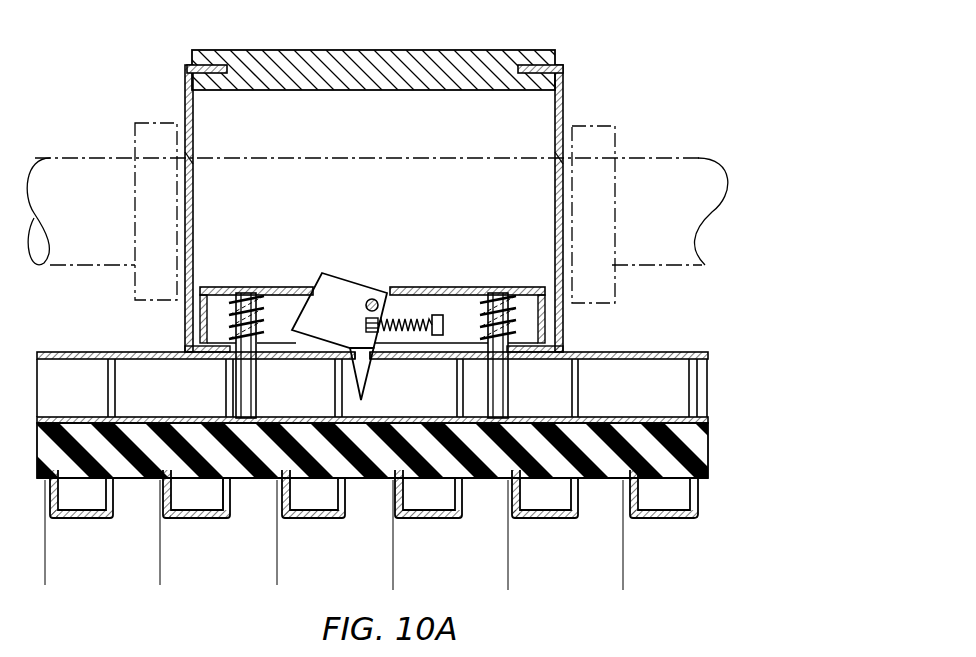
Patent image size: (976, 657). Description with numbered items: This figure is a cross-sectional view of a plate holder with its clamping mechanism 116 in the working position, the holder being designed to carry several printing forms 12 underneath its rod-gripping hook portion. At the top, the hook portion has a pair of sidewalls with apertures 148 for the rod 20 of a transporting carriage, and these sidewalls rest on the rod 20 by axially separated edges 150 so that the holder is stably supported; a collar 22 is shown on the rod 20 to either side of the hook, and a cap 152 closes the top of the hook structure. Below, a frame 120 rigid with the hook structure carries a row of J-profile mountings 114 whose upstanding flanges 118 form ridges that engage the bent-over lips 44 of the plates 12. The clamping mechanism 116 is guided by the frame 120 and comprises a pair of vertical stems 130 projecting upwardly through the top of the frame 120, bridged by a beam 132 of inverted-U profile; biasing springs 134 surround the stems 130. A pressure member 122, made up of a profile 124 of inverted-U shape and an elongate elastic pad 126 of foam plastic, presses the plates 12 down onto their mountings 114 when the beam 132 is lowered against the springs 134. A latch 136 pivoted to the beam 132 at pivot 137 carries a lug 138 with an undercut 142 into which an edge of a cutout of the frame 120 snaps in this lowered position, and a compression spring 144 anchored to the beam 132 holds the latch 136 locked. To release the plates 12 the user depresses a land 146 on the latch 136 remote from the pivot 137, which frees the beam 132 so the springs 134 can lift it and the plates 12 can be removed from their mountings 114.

The printing forms 12 is at (160, 570).
The rod 20 is at (78, 160).
The collar 22 is at (141, 120).
The bent-over lips 44 is at (175, 490).
The J-profile mountings 114 is at (678, 522).
The clamping mechanism 116 is at (153, 410).
The upstanding flanges 118 is at (522, 505).
The frame 120 is at (60, 351).
The pressure member 122 is at (368, 487).
The profile of inverted-U shape 124 is at (188, 416).
The elongate elastic pad 126 is at (709, 462).
The vertical stems 130 is at (257, 374).
The beam 132 is at (458, 287).
The biasing springs 134 is at (240, 300).
The latch 136 is at (366, 390).
The pivot 137 is at (372, 298).
The lug 138 is at (349, 395).
The undercut 142 is at (338, 345).
The compression spring 144 is at (410, 330).
The land 146 is at (356, 320).
The apertures 148 is at (194, 199).
The axially separated edges 150 is at (191, 163).
The housing cap 152 is at (413, 55).